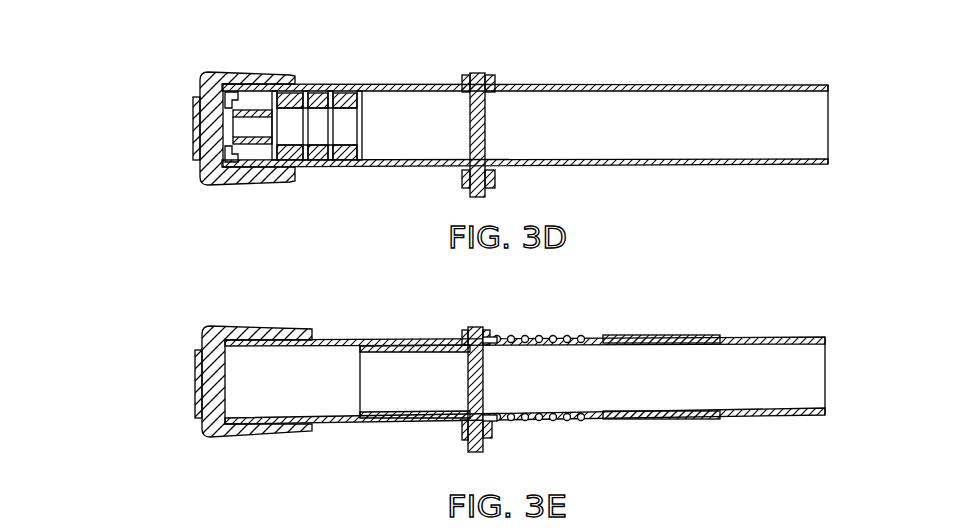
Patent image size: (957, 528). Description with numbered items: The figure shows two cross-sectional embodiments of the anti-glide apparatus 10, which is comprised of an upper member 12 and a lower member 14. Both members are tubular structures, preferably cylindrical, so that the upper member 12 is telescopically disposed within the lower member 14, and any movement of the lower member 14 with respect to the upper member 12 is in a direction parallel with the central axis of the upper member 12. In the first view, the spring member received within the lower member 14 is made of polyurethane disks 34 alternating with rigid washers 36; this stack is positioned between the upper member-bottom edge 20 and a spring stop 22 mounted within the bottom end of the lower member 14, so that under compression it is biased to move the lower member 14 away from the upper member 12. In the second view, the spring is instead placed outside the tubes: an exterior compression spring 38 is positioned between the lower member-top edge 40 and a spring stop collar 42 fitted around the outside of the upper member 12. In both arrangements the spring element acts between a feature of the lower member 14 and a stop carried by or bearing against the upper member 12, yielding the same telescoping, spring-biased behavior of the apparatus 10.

In FIG. 3D, the anti-glide apparatus 10 is at (512, 142).
In FIG. 3E, the anti-glide apparatus 10 is at (516, 378).
In FIG. 3D, the upper member 12 is at (620, 85).
In FIG. 3E, the upper member 12 is at (743, 340).
In FIG. 3D, the lower member 14 is at (418, 268).
In FIG. 3E, the lower member 14 is at (383, 420).
In FIG. 3D, the upper member-bottom edge 20 is at (363, 118).
In FIG. 3D, the spring stop 22 is at (257, 110).
In FIG. 3D, the polyurethane disks 34 is at (350, 165).
In FIG. 3D, the rigid washers 36 is at (360, 90).
In FIG. 3E, the exterior compression spring 38 is at (543, 333).
In FIG. 3E, the lower member-top edge 40 is at (517, 420).
In FIG. 3E, the spring stop collar 42 is at (667, 420).